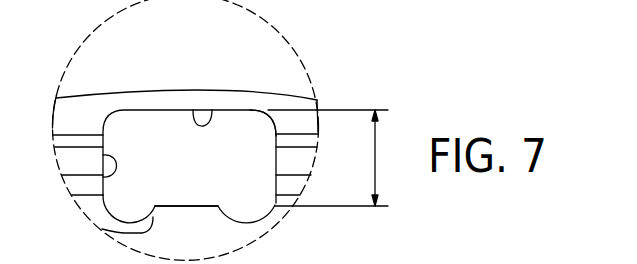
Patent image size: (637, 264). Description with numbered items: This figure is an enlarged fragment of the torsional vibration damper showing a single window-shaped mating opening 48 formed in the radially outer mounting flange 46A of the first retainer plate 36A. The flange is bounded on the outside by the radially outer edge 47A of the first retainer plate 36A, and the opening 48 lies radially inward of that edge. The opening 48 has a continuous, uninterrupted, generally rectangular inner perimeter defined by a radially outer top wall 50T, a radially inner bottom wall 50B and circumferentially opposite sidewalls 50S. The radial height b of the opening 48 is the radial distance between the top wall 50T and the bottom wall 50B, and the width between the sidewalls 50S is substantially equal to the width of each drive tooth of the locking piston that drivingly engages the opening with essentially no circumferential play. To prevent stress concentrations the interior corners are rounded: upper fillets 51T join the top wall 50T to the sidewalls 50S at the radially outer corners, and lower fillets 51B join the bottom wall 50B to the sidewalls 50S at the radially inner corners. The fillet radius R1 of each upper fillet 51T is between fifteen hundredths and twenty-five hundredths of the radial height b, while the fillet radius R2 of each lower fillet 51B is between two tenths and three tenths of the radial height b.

The first retainer plate 36A is at (222, 235).
The radially outer mounting flange 46A is at (160, 105).
The radially outer edge 47A is at (260, 93).
The mating opening 48 is at (148, 143).
The top wall 50T is at (195, 110).
The sidewall 50S is at (102, 156).
The bottom wall 50B is at (193, 206).
The upper fillet 51T is at (112, 113).
The lower fillet 51B is at (102, 229).
The fillet radius of upper fillet R1 is at (270, 113).
The fillet radius of lower fillet R2 is at (133, 222).
The radial height b is at (329, 158).